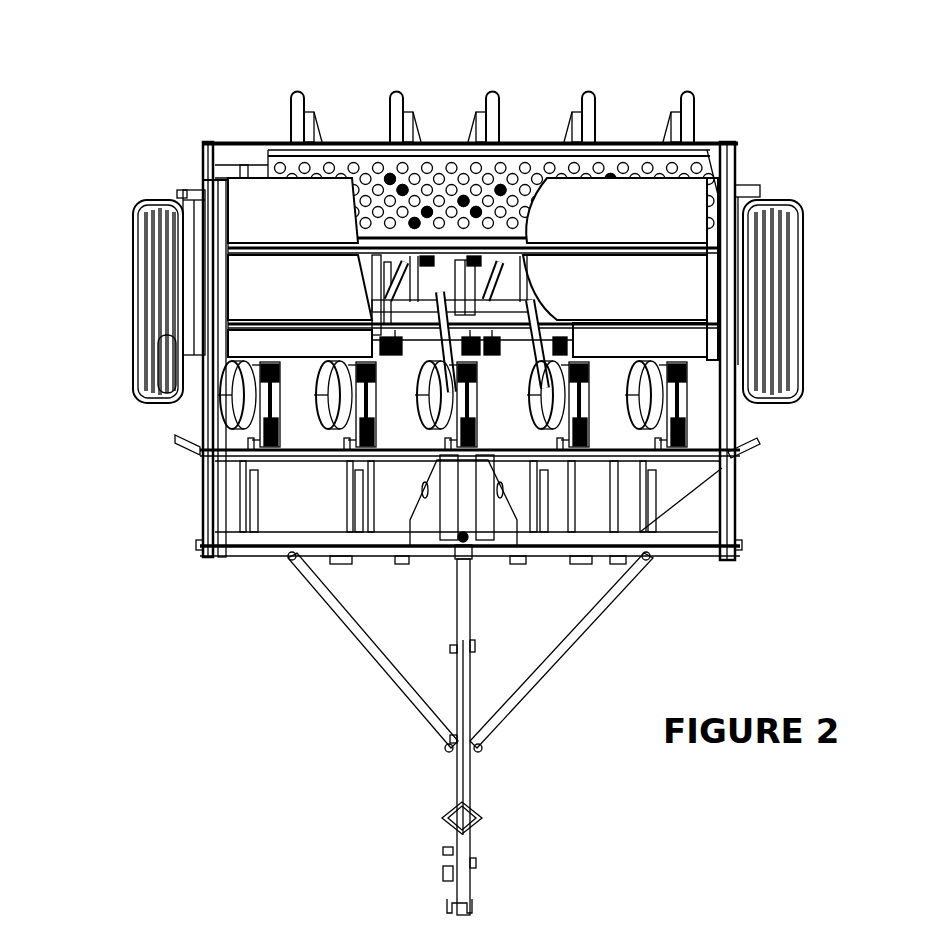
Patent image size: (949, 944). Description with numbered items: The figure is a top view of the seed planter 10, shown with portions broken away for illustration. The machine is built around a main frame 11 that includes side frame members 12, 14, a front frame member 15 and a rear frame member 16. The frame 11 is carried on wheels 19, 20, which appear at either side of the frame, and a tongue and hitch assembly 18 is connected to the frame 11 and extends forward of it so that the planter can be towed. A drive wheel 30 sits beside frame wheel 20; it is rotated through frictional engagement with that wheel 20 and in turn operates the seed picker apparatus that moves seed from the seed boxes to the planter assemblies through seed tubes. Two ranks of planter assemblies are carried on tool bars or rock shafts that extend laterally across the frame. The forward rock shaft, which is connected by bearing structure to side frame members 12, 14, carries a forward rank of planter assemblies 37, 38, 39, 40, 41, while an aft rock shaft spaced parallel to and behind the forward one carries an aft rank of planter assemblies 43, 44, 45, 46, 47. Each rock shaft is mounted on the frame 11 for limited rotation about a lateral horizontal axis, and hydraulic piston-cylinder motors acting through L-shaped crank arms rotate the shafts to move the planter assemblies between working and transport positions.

The seed planter 10 is at (830, 547).
The main frame 11 is at (737, 490).
The side frame member 12 is at (730, 420).
The side frame member 14 is at (203, 512).
The front frame member 15 is at (678, 545).
The rear frame member 16 is at (722, 150).
The tongue and hitch assembly 18 is at (472, 773).
The wheel 19 is at (783, 252).
The wheel 20 is at (140, 276).
The drive wheel 30 is at (170, 372).
The planter assembly 37 is at (228, 420).
The planter assembly 38 is at (323, 422).
The planter assembly 39 is at (417, 412).
The planter assembly 40 is at (548, 437).
The planter assembly 41 is at (656, 422).
The planter assembly 43 is at (289, 120).
The planter assembly 44 is at (384, 95).
The planter assembly 45 is at (500, 100).
The planter assembly 46 is at (598, 110).
The planter assembly 47 is at (697, 102).